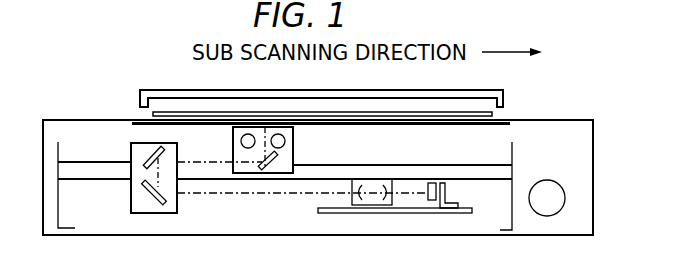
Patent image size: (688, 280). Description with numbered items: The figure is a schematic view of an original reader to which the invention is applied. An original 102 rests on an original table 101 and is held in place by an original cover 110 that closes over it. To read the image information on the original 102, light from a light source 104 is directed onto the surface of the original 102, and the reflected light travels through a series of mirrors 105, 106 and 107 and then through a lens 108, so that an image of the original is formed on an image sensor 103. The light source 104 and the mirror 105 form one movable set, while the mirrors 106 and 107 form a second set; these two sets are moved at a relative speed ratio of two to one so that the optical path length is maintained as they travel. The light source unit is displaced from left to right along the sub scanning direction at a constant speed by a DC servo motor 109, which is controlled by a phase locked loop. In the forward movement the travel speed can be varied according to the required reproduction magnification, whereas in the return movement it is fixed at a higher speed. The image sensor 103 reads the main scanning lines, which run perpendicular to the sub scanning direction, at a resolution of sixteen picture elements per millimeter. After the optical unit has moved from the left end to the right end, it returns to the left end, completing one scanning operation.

The original table 101 is at (482, 126).
The original 102 is at (492, 114).
The image sensor 103 is at (434, 208).
The light source 104 is at (241, 141).
The mirror 105 is at (277, 173).
The mirror 106 is at (131, 151).
The mirror 107 is at (131, 195).
The lens 108 is at (372, 193).
The DC servo motor 109 is at (548, 187).
The original cover 110 is at (465, 90).